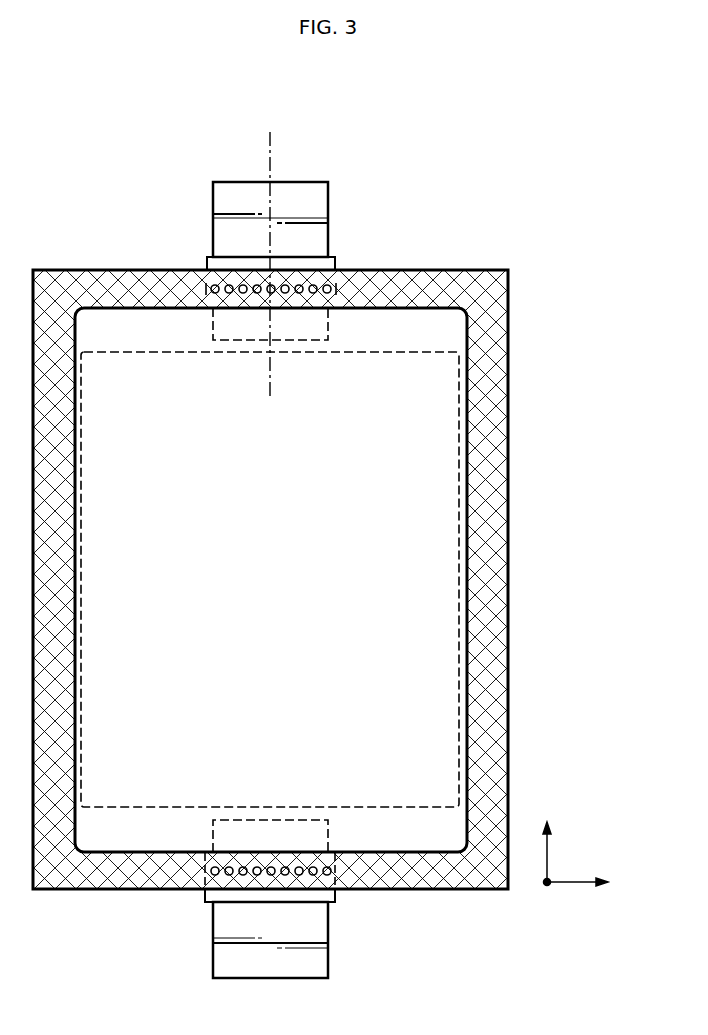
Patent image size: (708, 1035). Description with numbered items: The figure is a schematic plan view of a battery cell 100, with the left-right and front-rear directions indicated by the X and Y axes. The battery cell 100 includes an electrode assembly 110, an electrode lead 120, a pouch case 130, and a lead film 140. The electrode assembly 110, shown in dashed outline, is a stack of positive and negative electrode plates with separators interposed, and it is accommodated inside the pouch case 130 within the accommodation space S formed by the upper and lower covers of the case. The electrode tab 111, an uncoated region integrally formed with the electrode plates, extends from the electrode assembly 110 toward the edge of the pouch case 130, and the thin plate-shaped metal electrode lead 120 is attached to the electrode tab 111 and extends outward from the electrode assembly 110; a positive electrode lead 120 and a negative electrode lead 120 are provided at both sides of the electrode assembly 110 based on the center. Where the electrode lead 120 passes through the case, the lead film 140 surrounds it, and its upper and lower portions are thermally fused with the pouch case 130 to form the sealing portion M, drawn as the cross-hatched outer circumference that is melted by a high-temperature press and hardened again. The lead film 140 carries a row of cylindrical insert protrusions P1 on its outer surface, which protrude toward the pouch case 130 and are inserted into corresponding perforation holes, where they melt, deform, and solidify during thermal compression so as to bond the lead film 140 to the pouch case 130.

The battery cell 100 is at (82, 102).
The electrode assembly 110 is at (440, 637).
The electrode tab 111 is at (322, 347).
The electrode lead 120 is at (328, 210).
The pouch case 130 is at (354, 579).
The lead film 140 is at (335, 263).
The insert protrusion P1 is at (213, 285).
The accommodation space S is at (440, 337).
The sealing portion M is at (503, 497).